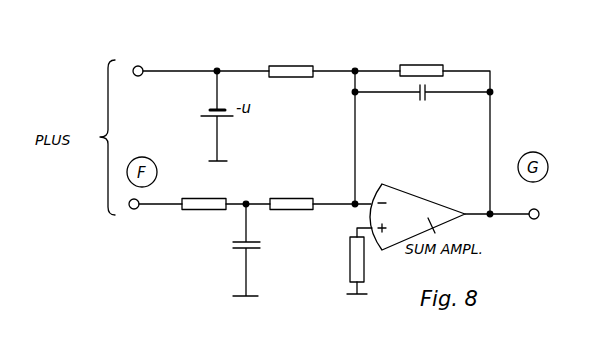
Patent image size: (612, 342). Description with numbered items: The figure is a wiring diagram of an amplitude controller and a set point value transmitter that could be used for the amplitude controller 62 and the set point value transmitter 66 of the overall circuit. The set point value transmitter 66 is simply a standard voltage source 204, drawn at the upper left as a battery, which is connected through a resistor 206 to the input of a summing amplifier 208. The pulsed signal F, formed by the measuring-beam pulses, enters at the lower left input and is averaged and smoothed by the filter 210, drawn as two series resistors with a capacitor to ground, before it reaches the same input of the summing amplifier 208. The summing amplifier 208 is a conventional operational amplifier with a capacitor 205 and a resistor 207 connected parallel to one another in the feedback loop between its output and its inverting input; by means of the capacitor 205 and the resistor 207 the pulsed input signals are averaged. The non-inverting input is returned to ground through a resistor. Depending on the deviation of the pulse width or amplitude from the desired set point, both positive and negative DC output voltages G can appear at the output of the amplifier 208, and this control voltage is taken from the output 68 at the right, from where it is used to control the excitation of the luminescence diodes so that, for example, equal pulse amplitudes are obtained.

The amplitude controller 62 is at (78, 137).
The set point value transmitter 66 is at (89, 137).
The output 68 is at (512, 214).
The standard voltage source 204 is at (212, 118).
The capacitor 205 is at (418, 98).
The resistor 206 is at (290, 70).
The resistor 207 is at (416, 68).
The summing amplifier 208 is at (408, 200).
The filter 210 is at (255, 194).